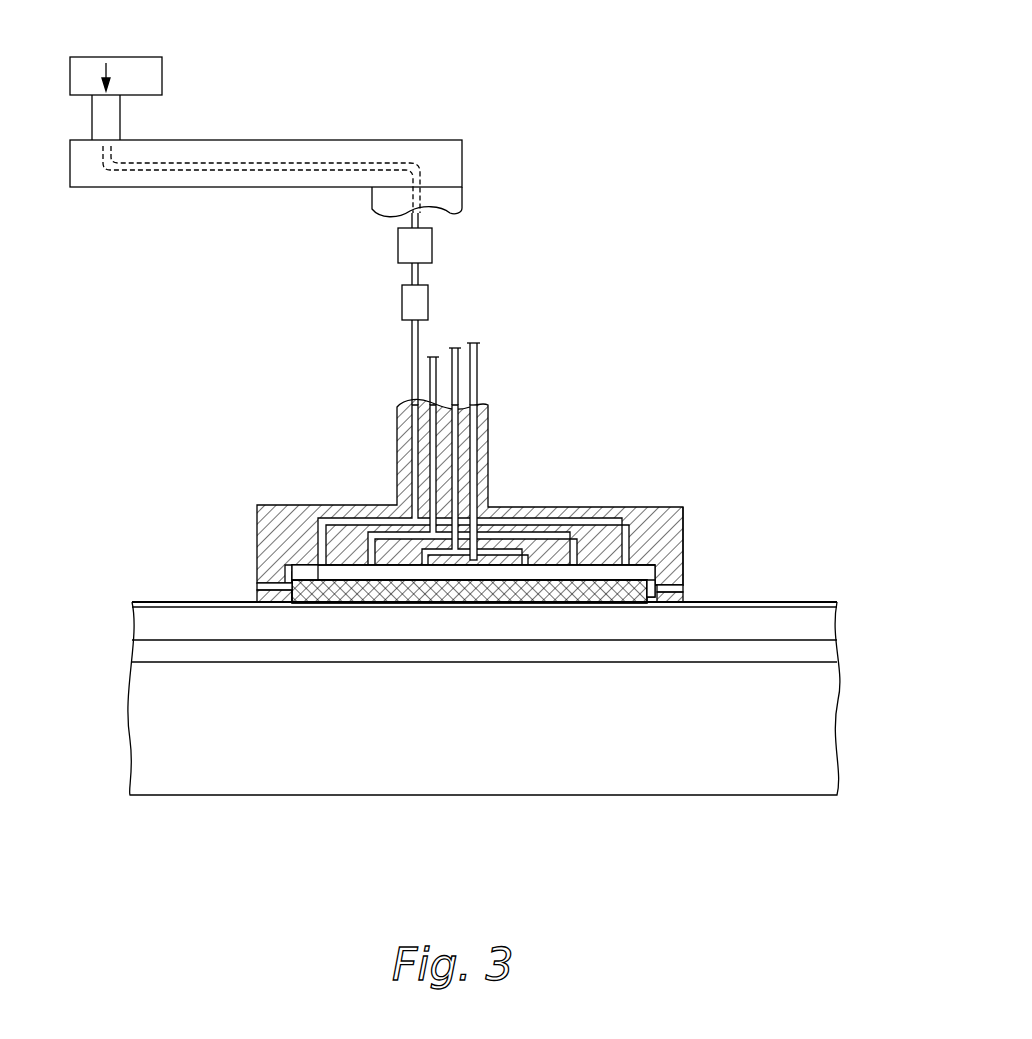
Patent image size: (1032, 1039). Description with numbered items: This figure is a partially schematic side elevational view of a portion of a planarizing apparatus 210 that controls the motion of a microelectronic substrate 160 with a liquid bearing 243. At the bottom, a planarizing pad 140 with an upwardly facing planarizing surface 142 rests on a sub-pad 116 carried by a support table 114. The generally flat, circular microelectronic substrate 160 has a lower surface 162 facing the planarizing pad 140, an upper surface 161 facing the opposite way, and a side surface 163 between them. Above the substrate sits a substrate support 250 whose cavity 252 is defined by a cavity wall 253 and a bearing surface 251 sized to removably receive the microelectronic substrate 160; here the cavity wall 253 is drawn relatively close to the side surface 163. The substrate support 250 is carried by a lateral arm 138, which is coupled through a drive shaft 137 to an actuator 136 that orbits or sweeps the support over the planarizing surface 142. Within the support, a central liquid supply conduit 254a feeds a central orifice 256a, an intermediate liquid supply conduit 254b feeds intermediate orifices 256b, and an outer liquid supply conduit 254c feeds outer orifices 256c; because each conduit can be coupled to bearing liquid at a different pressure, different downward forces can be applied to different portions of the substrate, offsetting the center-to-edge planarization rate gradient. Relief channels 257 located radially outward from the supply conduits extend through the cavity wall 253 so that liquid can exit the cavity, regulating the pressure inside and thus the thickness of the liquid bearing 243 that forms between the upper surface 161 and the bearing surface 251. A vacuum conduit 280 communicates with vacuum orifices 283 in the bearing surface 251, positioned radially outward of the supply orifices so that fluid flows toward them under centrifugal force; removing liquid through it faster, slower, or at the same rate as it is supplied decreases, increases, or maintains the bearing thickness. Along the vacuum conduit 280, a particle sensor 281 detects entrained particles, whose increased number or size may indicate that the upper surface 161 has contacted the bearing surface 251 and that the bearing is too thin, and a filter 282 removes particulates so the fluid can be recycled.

The actuator 136 is at (140, 57).
The drive shaft 137 is at (121, 118).
The lateral arm 138 is at (278, 187).
The filter 282 is at (398, 245).
The particle sensor 281 is at (402, 302).
The vacuum conduit 280 is at (410, 346).
The central liquid supply conduit 254a is at (477, 383).
The intermediate liquid supply conduit 254b is at (455, 367).
The outer liquid supply conduit 254c is at (431, 385).
The apparatus 210 is at (672, 347).
The substrate support 250 is at (635, 505).
The cavity wall 253 is at (302, 570).
The cavity 252 is at (300, 566).
The liquid bearing 243 is at (545, 556).
The upper surface 161 is at (684, 528).
The relief channels 257 is at (256, 588).
The vacuum orifices 283 is at (296, 606).
The central orifice 256a is at (478, 572).
The intermediate orifices 256b is at (365, 570).
The outer orifices 256c is at (582, 572).
The bearing surface 251 is at (320, 572).
The microelectronic substrate 160 is at (393, 590).
The lower surface 162 is at (645, 588).
The side surface 163 is at (672, 600).
The support table 114 is at (680, 777).
The planarizing surface 142 is at (836, 603).
The planarizing pad 140 is at (836, 625).
The sub-pad 116 is at (838, 652).